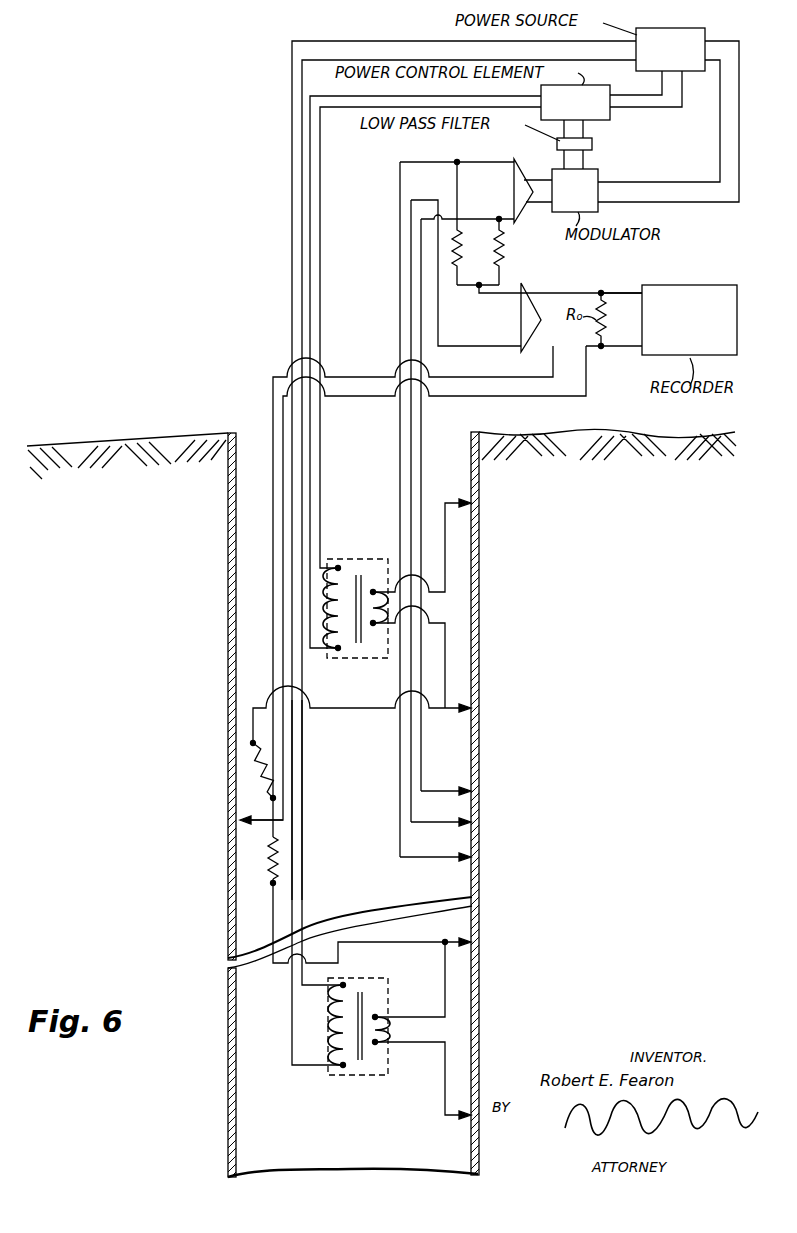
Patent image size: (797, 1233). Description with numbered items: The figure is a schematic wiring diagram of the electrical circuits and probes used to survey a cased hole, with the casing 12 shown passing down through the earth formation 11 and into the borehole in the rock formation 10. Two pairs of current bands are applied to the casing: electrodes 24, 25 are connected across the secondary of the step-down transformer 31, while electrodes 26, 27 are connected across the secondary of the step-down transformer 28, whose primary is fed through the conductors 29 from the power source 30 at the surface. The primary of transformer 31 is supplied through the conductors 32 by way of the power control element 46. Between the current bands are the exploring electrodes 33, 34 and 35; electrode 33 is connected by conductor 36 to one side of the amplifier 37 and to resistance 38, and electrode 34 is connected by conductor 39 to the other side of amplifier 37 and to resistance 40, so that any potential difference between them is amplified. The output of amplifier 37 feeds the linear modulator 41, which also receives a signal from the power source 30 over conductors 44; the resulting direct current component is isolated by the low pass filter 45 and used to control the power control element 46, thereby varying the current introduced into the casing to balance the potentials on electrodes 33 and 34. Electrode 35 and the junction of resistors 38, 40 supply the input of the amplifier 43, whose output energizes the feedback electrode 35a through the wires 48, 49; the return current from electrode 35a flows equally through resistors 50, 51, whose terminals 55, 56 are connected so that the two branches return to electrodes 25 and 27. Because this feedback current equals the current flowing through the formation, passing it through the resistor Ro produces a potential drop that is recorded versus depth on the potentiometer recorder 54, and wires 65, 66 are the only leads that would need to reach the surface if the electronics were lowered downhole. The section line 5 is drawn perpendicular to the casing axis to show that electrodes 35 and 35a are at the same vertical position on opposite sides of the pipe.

The power source 30 is at (670, 49).
The power control element 46 is at (611, 95).
The low pass filter 45 is at (593, 146).
The linear modulator 41 is at (575, 190).
The conductors 44 is at (678, 202).
The conductors 32 is at (312, 140).
The amplifier 37 is at (513, 159).
The resistance 40 is at (468, 223).
The resistance 38 is at (503, 246).
The conductor 39 is at (400, 287).
The conductor 36 is at (421, 364).
The amplifier 43 is at (523, 291).
The wire 65 is at (636, 293).
The wire 66 is at (630, 346).
The potentiometer recorder 54 is at (689, 320).
The wire 48 is at (413, 591).
The wire 49 is at (587, 376).
The casing 12 is at (480, 548).
The earth formation 11 is at (545, 595).
The formation 10 is at (357, 728).
The section line 5 is at (186, 820).
The step-down transformer 31 is at (366, 562).
The electrode 24 is at (439, 544).
The electrode 25 is at (379, 674).
The electrode 33 is at (463, 793).
The electrode 35 is at (457, 824).
The electrode 34 is at (453, 859).
The feedback electrode 35a is at (239, 821).
The terminal 55 is at (253, 743).
The resistor 50 is at (262, 773).
The conductors 29 is at (292, 792).
The resistor 51 is at (270, 851).
The terminal 56 is at (273, 883).
The electrode 26 is at (390, 921).
The step-down transformer 28 is at (376, 978).
The electrode 27 is at (439, 1092).